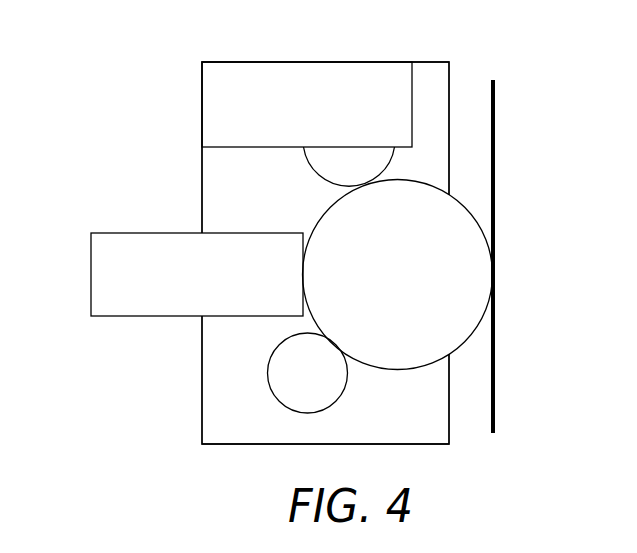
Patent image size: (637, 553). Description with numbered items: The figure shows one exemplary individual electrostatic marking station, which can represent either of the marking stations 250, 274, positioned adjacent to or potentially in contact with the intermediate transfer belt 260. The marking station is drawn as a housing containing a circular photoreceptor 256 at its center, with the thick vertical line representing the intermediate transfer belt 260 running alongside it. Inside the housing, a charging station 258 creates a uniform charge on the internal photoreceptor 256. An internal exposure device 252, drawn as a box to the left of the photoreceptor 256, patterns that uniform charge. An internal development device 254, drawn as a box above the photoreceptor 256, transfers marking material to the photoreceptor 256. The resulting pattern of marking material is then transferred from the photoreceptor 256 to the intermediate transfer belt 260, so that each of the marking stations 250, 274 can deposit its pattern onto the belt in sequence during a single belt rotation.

The marking station 250 is at (202, 105).
The marking station 274 is at (325, 253).
The exposure device 252 is at (90, 263).
The development device 254 is at (372, 62).
The photoreceptor 256 is at (398, 370).
The charging station 258 is at (267, 373).
The intermediate transfer belt 260 is at (510, 245).